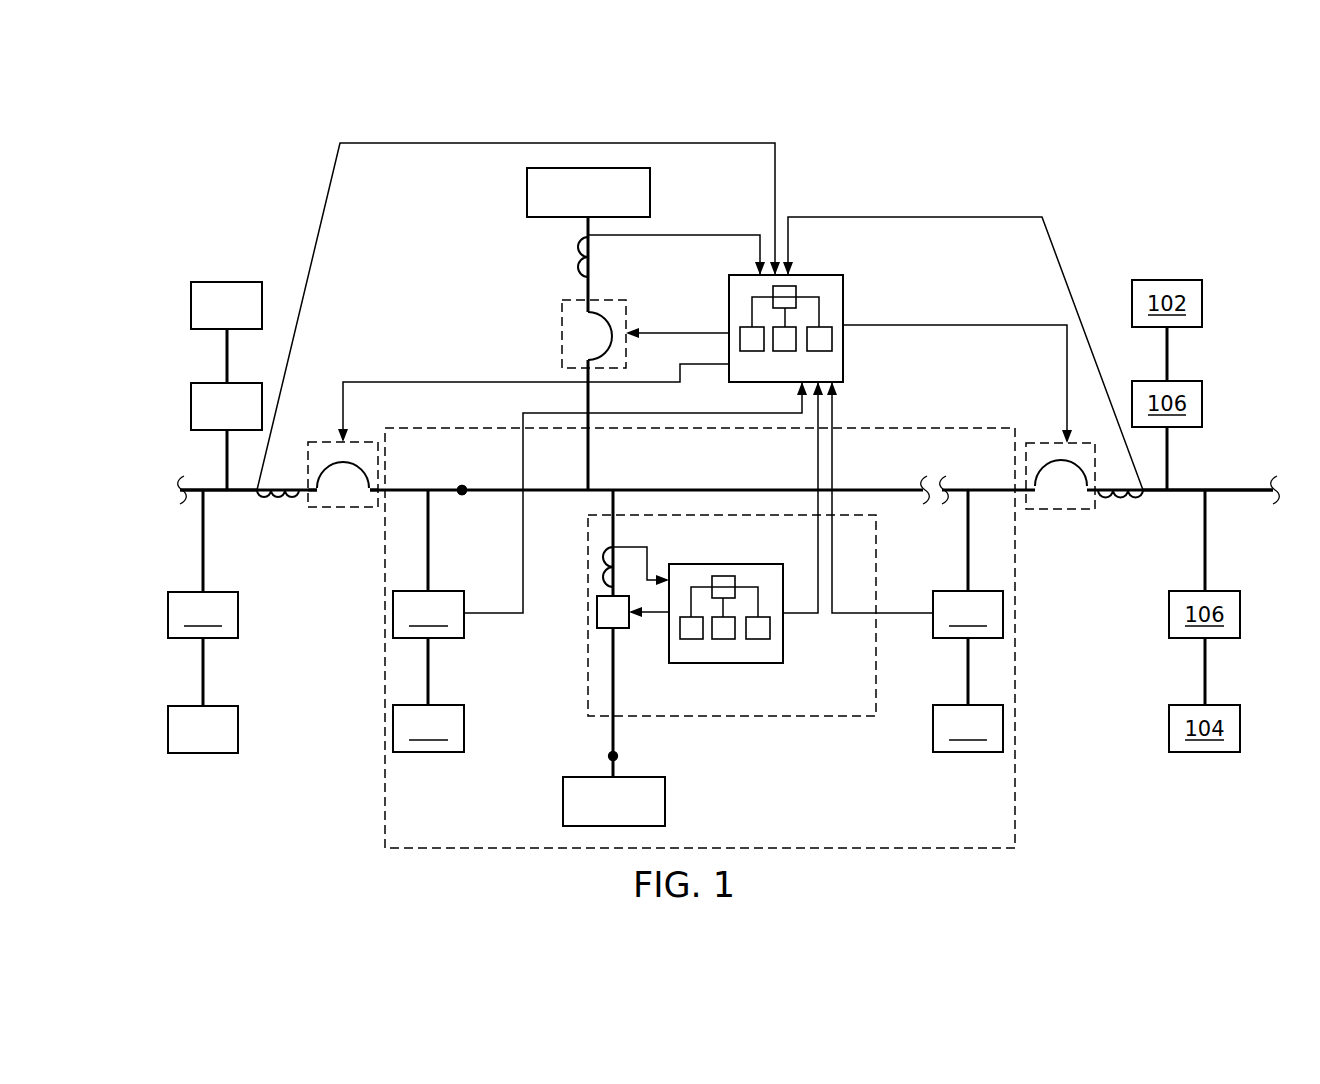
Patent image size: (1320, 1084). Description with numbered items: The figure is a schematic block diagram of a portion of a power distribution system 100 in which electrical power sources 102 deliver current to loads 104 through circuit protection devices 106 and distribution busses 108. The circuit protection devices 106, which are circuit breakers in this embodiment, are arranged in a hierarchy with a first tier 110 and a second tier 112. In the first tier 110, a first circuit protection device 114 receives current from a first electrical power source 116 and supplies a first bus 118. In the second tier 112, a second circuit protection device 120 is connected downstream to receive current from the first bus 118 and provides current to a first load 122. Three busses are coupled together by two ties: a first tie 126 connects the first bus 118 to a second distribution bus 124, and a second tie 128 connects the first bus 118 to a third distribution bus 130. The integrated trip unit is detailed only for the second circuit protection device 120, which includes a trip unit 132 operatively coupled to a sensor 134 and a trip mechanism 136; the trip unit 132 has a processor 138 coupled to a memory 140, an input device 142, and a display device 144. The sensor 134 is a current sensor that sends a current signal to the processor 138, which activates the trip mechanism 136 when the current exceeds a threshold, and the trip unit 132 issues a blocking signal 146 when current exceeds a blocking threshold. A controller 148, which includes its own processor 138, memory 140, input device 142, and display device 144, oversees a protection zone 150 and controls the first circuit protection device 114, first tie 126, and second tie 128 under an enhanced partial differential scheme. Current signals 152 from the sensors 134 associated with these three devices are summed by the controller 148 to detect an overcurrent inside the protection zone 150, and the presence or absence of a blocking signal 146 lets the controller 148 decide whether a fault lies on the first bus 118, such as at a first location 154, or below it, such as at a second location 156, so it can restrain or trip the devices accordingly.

The power distribution system 100 is at (1094, 166).
The electrical power source 102 is at (207, 317).
The load 104 is at (184, 741).
The circuit protection device 106 is at (207, 418).
The distribution bus 108 is at (737, 492).
The first tier 110 is at (180, 354).
The second tier 112 is at (180, 562).
The first circuit protection device 114 is at (560, 327).
The first electrical power source 116 is at (542, 204).
The first bus 118 is at (478, 487).
The second circuit protection device 120 is at (586, 665).
The first load 122 is at (570, 813).
The second distribution bus 124 is at (241, 494).
The first tie 126 is at (371, 434).
The second tie 128 is at (1031, 436).
The third distribution bus 130 is at (1240, 487).
The trip unit 132 is at (785, 645).
The sensor 134 is at (578, 245).
The trip mechanism 136 is at (595, 610).
The processor 138 is at (722, 574).
The memory 140 is at (760, 640).
The input device 142 is at (723, 640).
The display device 144 is at (690, 640).
The blocking signal 146 is at (641, 414).
The controller 148 is at (843, 305).
The protection zone 150 is at (1016, 668).
The current signal 152 is at (408, 145).
The first location 154 is at (460, 498).
The second location 156 is at (620, 756).